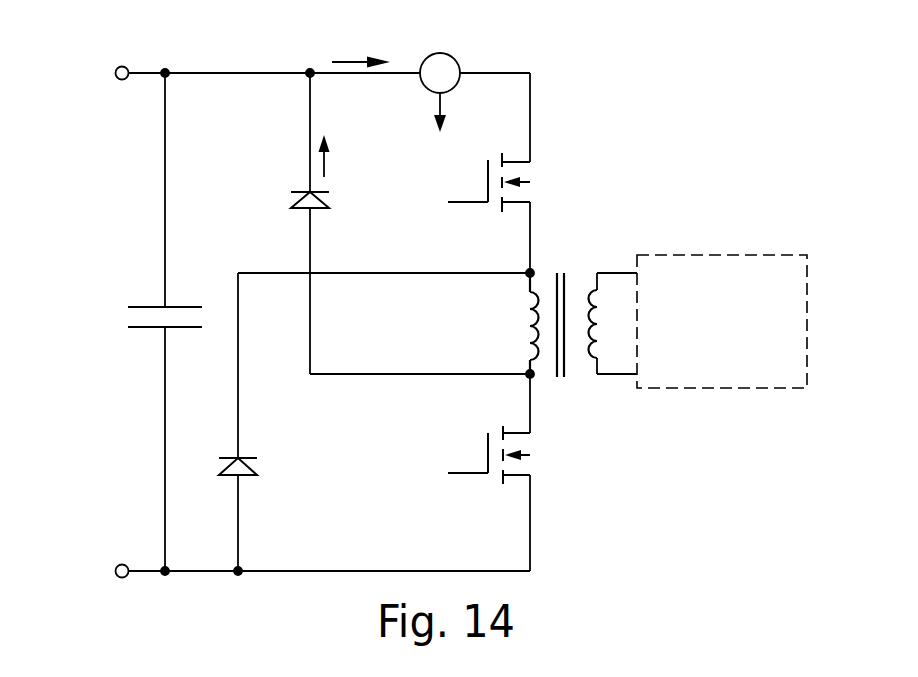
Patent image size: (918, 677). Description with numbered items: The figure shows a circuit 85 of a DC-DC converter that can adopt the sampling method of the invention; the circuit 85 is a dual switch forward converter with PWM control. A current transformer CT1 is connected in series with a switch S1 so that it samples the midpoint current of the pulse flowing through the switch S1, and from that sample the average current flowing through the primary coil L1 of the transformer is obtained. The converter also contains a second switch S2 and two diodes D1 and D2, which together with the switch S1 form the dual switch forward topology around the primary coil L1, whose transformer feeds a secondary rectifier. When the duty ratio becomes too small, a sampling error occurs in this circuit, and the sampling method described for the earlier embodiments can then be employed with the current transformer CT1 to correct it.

The circuit 85 is at (710, 85).
The current transformer CT1 is at (468, 86).
The switch S1 is at (510, 182).
The switch S2 is at (512, 455).
The diode D1 is at (335, 201).
The diode D2 is at (259, 468).
The primary coil L1 is at (541, 325).